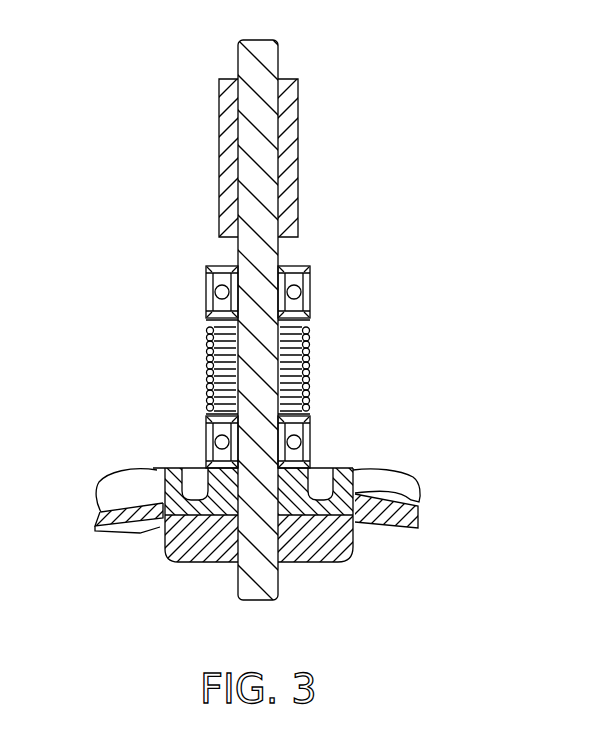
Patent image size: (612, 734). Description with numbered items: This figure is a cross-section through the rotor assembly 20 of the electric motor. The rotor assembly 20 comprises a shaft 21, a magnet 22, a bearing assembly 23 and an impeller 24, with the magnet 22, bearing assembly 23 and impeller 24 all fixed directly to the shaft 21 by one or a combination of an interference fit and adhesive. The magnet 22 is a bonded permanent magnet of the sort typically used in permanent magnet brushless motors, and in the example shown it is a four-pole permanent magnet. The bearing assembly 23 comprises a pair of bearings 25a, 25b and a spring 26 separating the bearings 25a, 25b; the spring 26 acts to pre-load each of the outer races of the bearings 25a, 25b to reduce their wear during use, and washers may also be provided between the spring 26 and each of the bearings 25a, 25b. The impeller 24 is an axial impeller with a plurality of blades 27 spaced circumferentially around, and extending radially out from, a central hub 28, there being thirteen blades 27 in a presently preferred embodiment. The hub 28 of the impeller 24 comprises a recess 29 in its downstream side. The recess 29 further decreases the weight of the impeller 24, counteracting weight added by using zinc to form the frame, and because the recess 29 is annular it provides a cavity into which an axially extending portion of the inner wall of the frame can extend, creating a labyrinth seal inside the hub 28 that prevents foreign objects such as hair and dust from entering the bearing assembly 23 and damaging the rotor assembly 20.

The rotor assembly 20 is at (306, 343).
The shaft 21 is at (262, 62).
The magnet 22 is at (285, 135).
The bearing assembly 23 is at (242, 367).
The impeller 24 is at (298, 523).
The bearing 25a is at (312, 455).
The bearing 25b is at (310, 305).
The spring 26 is at (312, 375).
The blades 27 is at (413, 505).
The central hub 28 is at (175, 547).
The recess 29 is at (195, 485).